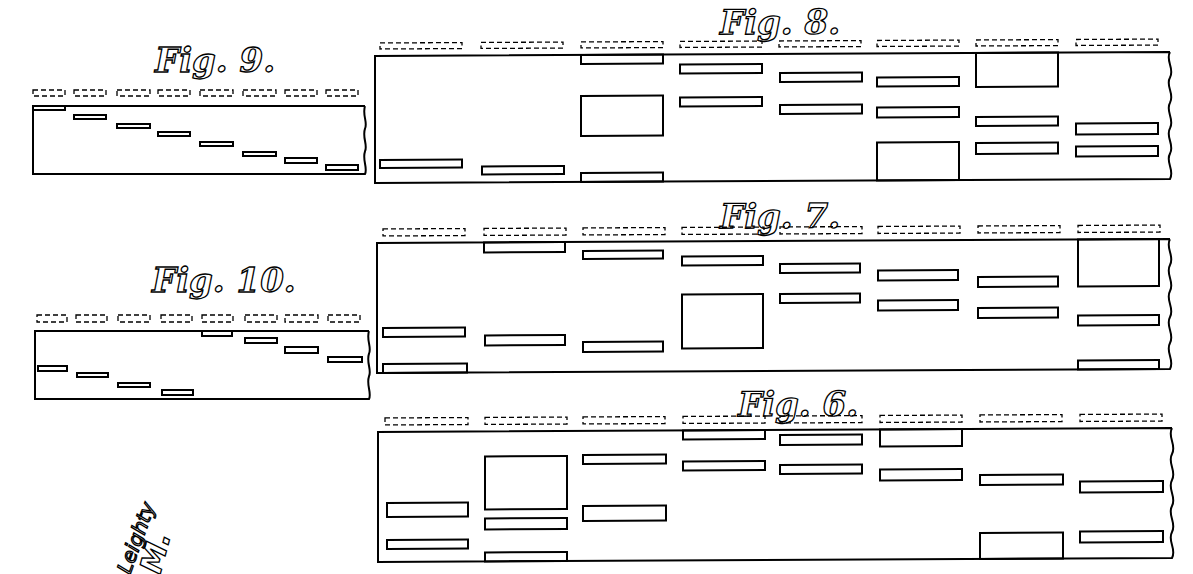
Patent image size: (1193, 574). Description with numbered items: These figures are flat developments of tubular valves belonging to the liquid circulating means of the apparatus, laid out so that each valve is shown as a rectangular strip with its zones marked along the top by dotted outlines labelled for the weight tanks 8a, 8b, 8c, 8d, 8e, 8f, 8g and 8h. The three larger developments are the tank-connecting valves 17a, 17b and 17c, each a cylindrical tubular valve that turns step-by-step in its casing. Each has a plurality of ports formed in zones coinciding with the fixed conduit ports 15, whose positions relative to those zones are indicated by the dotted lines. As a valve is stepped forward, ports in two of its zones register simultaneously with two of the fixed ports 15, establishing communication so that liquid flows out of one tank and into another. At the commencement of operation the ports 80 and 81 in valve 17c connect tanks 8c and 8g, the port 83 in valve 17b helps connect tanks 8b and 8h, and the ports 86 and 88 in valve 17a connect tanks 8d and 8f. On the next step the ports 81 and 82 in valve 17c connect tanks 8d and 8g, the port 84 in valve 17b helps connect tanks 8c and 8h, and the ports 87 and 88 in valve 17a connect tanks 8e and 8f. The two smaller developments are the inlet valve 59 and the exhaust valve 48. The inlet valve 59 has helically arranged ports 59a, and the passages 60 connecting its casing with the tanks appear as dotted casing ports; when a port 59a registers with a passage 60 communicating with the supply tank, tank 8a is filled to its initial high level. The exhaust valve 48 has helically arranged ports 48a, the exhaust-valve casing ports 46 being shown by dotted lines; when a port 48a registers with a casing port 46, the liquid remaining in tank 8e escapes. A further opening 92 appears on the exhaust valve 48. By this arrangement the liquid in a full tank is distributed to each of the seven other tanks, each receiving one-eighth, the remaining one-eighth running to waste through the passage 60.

In FIG. 9, the weight tank 8a is at (49, 98).
In FIG. 10, the weight tank 8a is at (52, 324).
In FIG. 8, the weight tank 8a is at (421, 48).
In FIG. 7, the weight tank 8a is at (424, 235).
In FIG. 6, the weight tank 8a is at (426, 424).
In FIG. 9, the weight tank 8b is at (90, 98).
In FIG. 10, the weight tank 8b is at (91, 324).
In FIG. 8, the weight tank 8b is at (522, 47).
In FIG. 7, the weight tank 8b is at (525, 234).
In FIG. 6, the weight tank 8b is at (526, 423).
In FIG. 9, the weight tank 8c is at (133, 98).
In FIG. 10, the weight tank 8c is at (134, 324).
In FIG. 8, the weight tank 8c is at (622, 47).
In FIG. 7, the weight tank 8c is at (624, 234).
In FIG. 6, the weight tank 8c is at (624, 423).
In FIG. 9, the weight tank 8d is at (174, 98).
In FIG. 10, the weight tank 8d is at (176, 324).
In FIG. 8, the weight tank 8d is at (721, 46).
In FIG. 7, the weight tank 8d is at (723, 233).
In FIG. 6, the weight tank 8d is at (724, 422).
In FIG. 9, the weight tank 8e is at (216, 98).
In FIG. 10, the weight tank 8e is at (217, 324).
In FIG. 8, the weight tank 8e is at (820, 46).
In FIG. 7, the weight tank 8e is at (821, 233).
In FIG. 6, the weight tank 8e is at (821, 422).
In FIG. 9, the weight tank 8f is at (259, 98).
In FIG. 10, the weight tank 8f is at (261, 324).
In FIG. 8, the weight tank 8f is at (918, 45).
In FIG. 7, the weight tank 8f is at (919, 232).
In FIG. 6, the weight tank 8f is at (921, 421).
In FIG. 9, the weight tank 8g is at (301, 98).
In FIG. 10, the weight tank 8g is at (301, 324).
In FIG. 8, the weight tank 8g is at (1017, 45).
In FIG. 7, the weight tank 8g is at (1019, 232).
In FIG. 6, the weight tank 8g is at (1021, 421).
In FIG. 9, the weight tank 8h is at (342, 98).
In FIG. 10, the weight tank 8h is at (344, 324).
In FIG. 8, the weight tank 8h is at (1117, 44).
In FIG. 7, the weight tank 8h is at (1119, 231).
In FIG. 6, the weight tank 8h is at (1121, 420).
In FIG. 8, the port 15 is at (769, 34).
In FIG. 7, the port 15 is at (773, 219).
In FIG. 6, the port 15 is at (773, 407).
In FIG. 6, the tank-connecting valve 17a is at (380, 483).
In FIG. 7, the tank-connecting valve 17b is at (393, 284).
In FIG. 8, the tank-connecting valve 17c is at (378, 184).
In FIG. 10, the exhaust pipe 46 is at (198, 307).
In FIG. 10, the exhaust valve 48 is at (270, 387).
In FIG. 10, the port 48a is at (50, 367).
In FIG. 10, the lug 92 is at (228, 337).
In FIG. 9, the inlet valve 59 is at (151, 163).
In FIG. 9, the port 59a is at (86, 120).
In FIG. 9, the passage 60 is at (195, 77).
In FIG. 8, the port 80 is at (582, 64).
In FIG. 8, the port 81 is at (1017, 70).
In FIG. 8, the port 82 is at (763, 72).
In FIG. 7, the port 83 is at (524, 253).
In FIG. 7, the port 84 is at (610, 260).
In FIG. 6, the port 86 is at (735, 438).
In FIG. 6, the port 87 is at (833, 443).
In FIG. 6, the port 88 is at (927, 445).